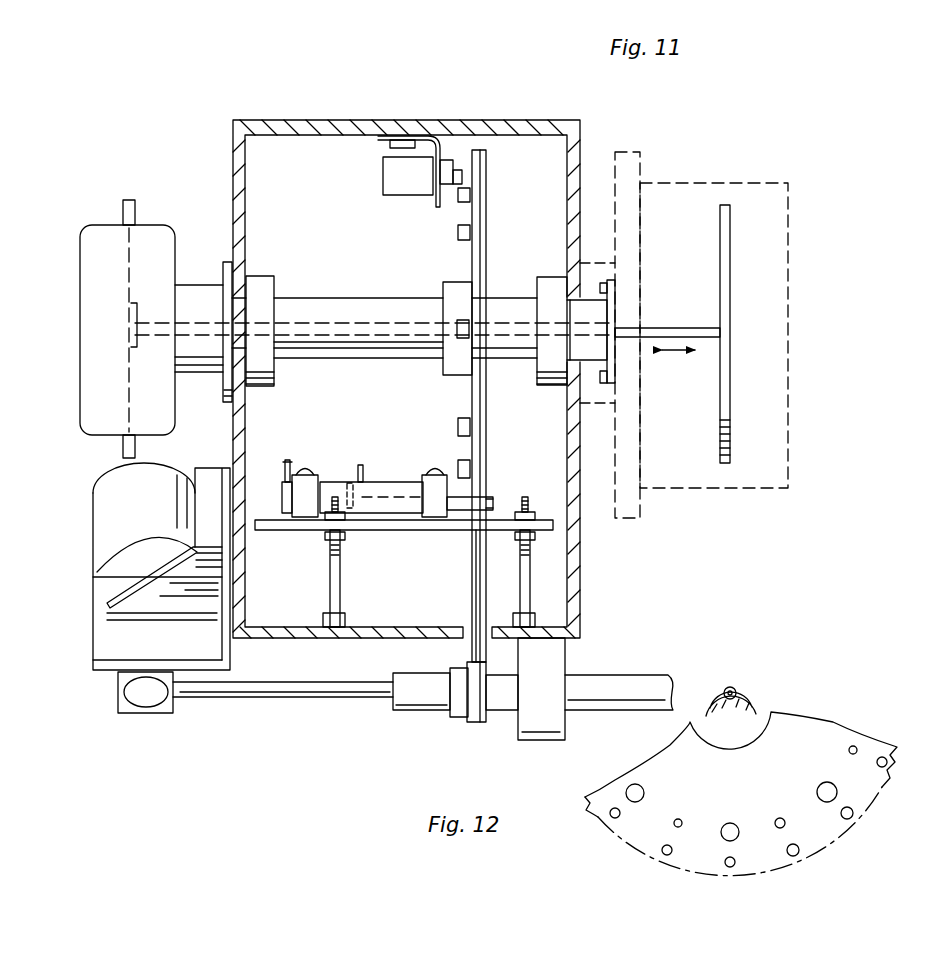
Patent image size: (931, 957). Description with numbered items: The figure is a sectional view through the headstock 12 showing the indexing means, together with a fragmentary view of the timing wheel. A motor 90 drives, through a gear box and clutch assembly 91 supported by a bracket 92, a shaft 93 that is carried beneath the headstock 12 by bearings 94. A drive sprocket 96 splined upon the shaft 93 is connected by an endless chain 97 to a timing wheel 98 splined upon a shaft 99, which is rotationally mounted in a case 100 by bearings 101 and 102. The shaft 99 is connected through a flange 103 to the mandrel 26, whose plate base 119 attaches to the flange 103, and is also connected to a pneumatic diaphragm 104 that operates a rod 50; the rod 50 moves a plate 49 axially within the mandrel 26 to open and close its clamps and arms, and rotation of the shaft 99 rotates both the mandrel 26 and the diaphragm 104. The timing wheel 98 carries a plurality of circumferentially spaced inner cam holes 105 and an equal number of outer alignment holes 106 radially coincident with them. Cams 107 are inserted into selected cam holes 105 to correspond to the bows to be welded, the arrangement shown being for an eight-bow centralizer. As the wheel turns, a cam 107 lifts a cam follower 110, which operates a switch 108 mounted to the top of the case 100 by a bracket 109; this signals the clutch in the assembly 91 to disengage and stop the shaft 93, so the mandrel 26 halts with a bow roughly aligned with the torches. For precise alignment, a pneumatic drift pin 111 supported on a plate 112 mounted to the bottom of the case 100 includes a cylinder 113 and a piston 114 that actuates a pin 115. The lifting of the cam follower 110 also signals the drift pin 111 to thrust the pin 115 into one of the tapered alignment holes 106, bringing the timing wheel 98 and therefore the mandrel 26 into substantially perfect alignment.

In FIG. 11, the headstock 12 is at (308, 110).
In FIG. 11, the mandrel 26 is at (669, 181).
In FIG. 11, the plate 49 is at (731, 233).
In FIG. 11, the rod 50 is at (313, 342).
In FIG. 11, the motor 90 is at (96, 505).
In FIG. 11, the gear box and clutch assembly 91 is at (113, 690).
In FIG. 11, the bracket 92 is at (93, 600).
In FIG. 11, the shaft 93 is at (252, 688).
In FIG. 11, the bearings 94 is at (556, 660).
In FIG. 11, the drive sprocket 96 is at (470, 716).
In FIG. 11, the endless chain 97 is at (472, 577).
In FIG. 11, the timing wheel 98 is at (489, 172).
In FIG. 12, the timing wheel 98 is at (787, 720).
In FIG. 11, the shaft 99 is at (320, 297).
In FIG. 11, the case 100 is at (236, 162).
In FIG. 11, the bearing 101 is at (266, 276).
In FIG. 11, the bearing 102 is at (537, 280).
In FIG. 11, the flange 103 is at (617, 293).
In FIG. 11, the pneumatic diaphragm 104 is at (93, 224).
In FIG. 12, the inner cam hole 105 is at (678, 818).
In FIG. 12, the outer alignment hole 106 is at (664, 854).
In FIG. 11, the cam 107 is at (457, 233).
In FIG. 12, the cam 107 is at (730, 822).
In FIG. 11, the switch 108 is at (382, 175).
In FIG. 11, the bracket 109 is at (441, 148).
In FIG. 11, the cam follower 110 is at (456, 165).
In FIG. 11, the pneumatic drift pin 111 is at (390, 480).
In FIG. 11, the plate 112 is at (260, 533).
In FIG. 11, the cylinder 113 is at (327, 478).
In FIG. 11, the piston 114 is at (350, 483).
In FIG. 11, the pin 115 is at (490, 497).
In FIG. 12, the pin 115 is at (727, 866).
In FIG. 11, the plate base 119 is at (625, 150).